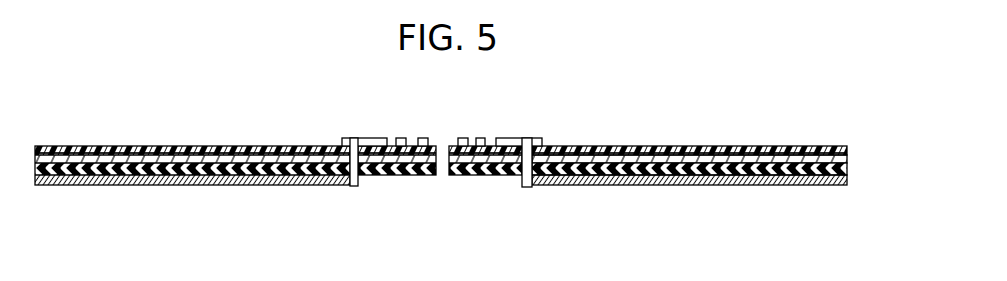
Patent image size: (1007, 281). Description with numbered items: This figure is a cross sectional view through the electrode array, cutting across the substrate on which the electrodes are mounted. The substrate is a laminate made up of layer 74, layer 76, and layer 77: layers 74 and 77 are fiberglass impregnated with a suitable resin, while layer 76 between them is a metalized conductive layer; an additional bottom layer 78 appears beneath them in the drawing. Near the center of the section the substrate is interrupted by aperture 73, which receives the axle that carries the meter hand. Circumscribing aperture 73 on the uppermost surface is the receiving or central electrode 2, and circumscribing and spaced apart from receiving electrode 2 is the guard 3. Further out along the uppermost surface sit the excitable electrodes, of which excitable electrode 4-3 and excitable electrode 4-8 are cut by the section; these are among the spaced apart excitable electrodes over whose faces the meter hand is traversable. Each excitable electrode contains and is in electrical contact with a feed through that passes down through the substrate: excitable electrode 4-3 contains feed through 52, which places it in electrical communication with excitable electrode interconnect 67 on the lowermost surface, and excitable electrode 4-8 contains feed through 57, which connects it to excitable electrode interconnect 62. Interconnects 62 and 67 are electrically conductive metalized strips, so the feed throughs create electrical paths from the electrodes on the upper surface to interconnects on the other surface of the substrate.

The receiving electrode 2 is at (424, 138).
The guard 3 is at (402, 138).
The excitable electrode 4-3 is at (510, 138).
The excitable electrode 4-8 is at (366, 138).
The feed through 52 is at (524, 138).
The feed through 57 is at (349, 137).
The excitable electrode interconnect 62 is at (90, 186).
The excitable electrode interconnect 67 is at (719, 184).
The aperture 73 is at (441, 176).
The substrate layer 74 is at (847, 146).
The metalized conductive layer 76 is at (847, 159).
The substrate layer 77 is at (847, 170).
The bottom layer 78 is at (847, 182).